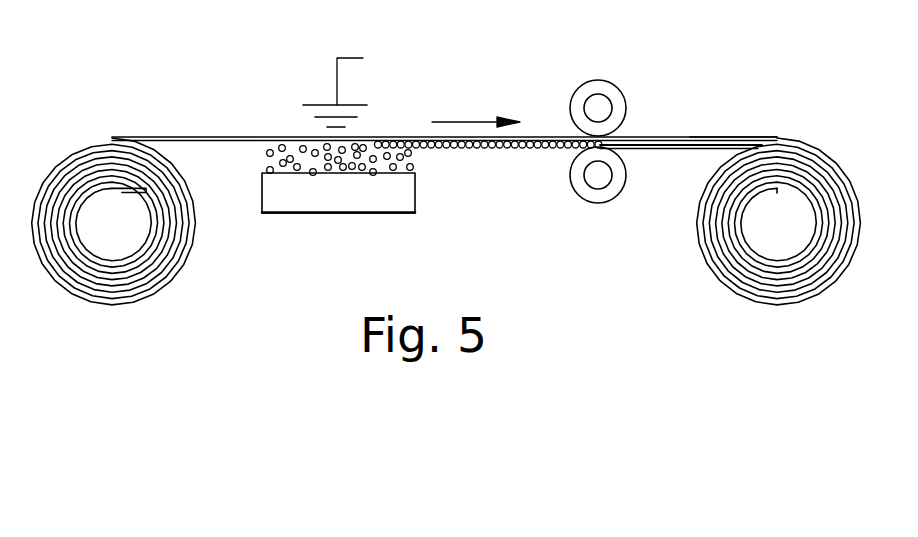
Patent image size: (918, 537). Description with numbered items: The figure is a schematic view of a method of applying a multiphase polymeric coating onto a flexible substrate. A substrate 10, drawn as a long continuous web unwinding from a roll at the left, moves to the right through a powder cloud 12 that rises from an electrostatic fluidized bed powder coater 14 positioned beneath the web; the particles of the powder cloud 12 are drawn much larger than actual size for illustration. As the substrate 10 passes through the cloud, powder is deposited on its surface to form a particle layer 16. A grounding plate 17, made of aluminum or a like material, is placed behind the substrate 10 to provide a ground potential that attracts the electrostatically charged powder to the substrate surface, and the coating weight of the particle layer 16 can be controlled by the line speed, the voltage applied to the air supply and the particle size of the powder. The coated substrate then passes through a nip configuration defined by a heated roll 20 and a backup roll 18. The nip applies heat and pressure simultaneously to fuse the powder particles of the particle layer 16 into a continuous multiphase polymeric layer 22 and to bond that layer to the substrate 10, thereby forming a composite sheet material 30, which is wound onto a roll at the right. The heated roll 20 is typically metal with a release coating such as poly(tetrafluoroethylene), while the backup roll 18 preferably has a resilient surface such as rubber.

The substrate 10 is at (230, 136).
The powder cloud 12 is at (290, 157).
The electrostatic fluidized bed powder coater 14 is at (397, 193).
The particle layer 16 is at (522, 148).
The grounding plate 17 is at (335, 82).
The backup roll 18 is at (607, 88).
The heated roll 20 is at (618, 185).
The multiphase polymeric layer 22 is at (685, 149).
The composite sheet material 30 is at (720, 137).